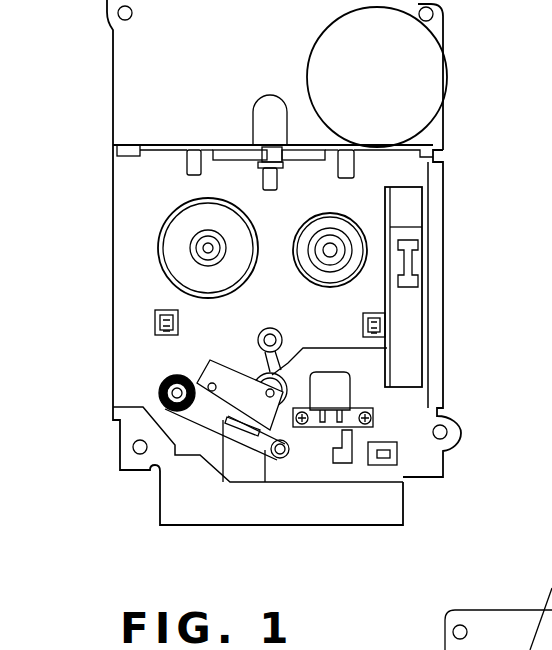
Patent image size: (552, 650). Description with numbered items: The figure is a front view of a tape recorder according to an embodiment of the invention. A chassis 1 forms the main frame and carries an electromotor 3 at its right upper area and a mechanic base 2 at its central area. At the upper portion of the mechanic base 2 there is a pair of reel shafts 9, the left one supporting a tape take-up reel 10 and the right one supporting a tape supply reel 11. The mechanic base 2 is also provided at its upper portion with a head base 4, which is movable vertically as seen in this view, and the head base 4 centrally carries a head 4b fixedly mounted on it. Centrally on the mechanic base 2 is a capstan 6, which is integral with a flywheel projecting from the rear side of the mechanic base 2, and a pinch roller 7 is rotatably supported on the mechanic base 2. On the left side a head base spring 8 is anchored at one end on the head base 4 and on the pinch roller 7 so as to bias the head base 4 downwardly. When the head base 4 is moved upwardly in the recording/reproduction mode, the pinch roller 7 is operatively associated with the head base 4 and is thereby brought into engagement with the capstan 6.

The chassis 1 is at (128, 72).
The mechanic base 2 is at (128, 192).
The electromotor 3 is at (428, 73).
The head base 4 is at (410, 346).
The head 4b is at (347, 397).
The capstan 6 is at (258, 343).
The pinch roller 7 is at (290, 433).
The head base spring 8 is at (242, 450).
The reel shafts 9 is at (190, 242).
The tape take-up reel 10 is at (185, 257).
The tape supply reel 11 is at (350, 240).